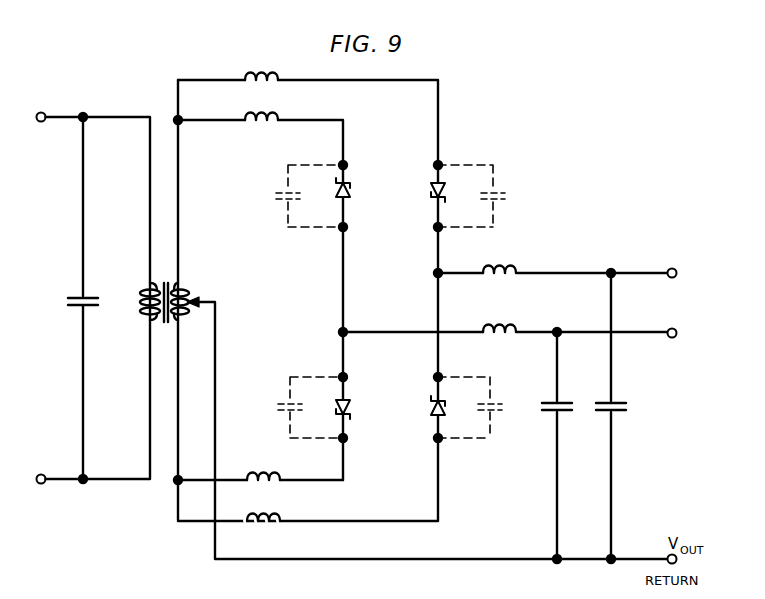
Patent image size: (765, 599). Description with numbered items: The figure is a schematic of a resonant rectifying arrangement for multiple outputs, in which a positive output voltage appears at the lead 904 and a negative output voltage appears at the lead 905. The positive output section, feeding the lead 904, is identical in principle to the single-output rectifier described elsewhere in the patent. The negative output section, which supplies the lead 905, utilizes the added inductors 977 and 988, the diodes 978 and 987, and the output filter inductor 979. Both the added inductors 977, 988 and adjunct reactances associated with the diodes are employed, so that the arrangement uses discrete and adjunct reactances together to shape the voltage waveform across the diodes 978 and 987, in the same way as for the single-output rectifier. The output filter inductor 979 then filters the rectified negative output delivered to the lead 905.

The inductor 977 is at (269, 113).
The diode 978 is at (330, 196).
The output filter inductor 979 is at (503, 320).
The diode 987 is at (331, 407).
The inductor 988 is at (258, 470).
The lead 904 is at (657, 279).
The lead 905 is at (657, 330).